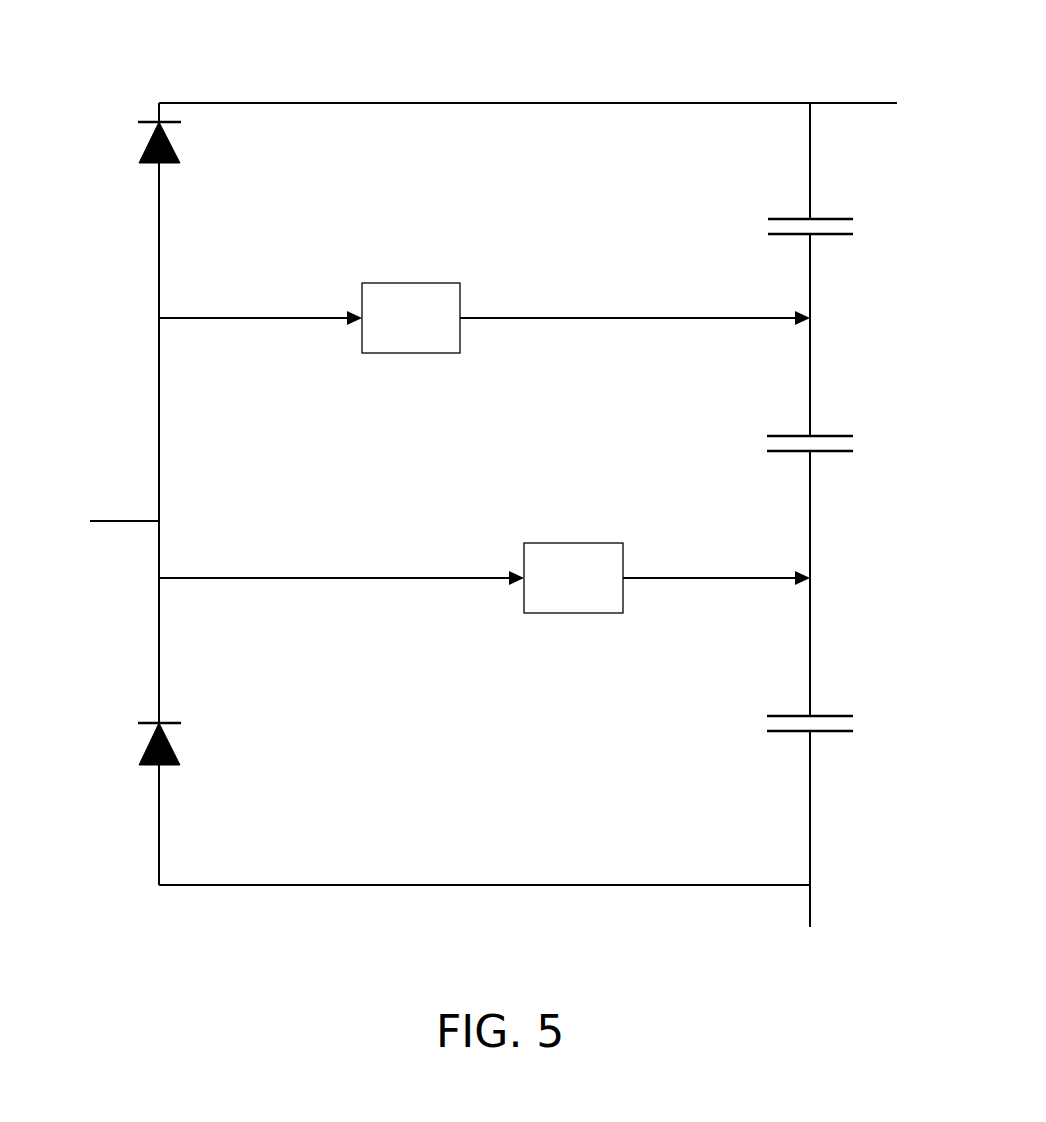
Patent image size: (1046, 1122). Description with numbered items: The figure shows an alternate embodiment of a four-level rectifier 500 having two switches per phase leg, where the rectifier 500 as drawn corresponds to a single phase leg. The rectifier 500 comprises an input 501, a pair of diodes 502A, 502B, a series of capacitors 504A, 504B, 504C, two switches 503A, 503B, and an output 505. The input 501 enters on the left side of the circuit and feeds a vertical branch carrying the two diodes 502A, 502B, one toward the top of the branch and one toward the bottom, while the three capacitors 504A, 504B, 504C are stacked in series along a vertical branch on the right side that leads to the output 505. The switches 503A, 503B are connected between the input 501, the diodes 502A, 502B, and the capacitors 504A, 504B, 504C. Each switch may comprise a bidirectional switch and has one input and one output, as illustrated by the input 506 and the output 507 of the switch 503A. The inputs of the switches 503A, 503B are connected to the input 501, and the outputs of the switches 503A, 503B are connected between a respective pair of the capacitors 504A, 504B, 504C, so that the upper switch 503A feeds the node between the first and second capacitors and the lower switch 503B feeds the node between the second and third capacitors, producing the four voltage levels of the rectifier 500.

The 4-level rectifier 500 is at (141, 30).
The input 501 is at (82, 530).
The diode 502A is at (177, 147).
The diode 502B is at (175, 749).
The switch 503A is at (390, 340).
The switch 503B is at (552, 598).
The capacitor 504A is at (770, 228).
The capacitor 504B is at (770, 444).
The capacitor 504C is at (770, 724).
The output 505 is at (932, 110).
The input of switch 506 is at (360, 316).
The output of switch 507 is at (462, 317).